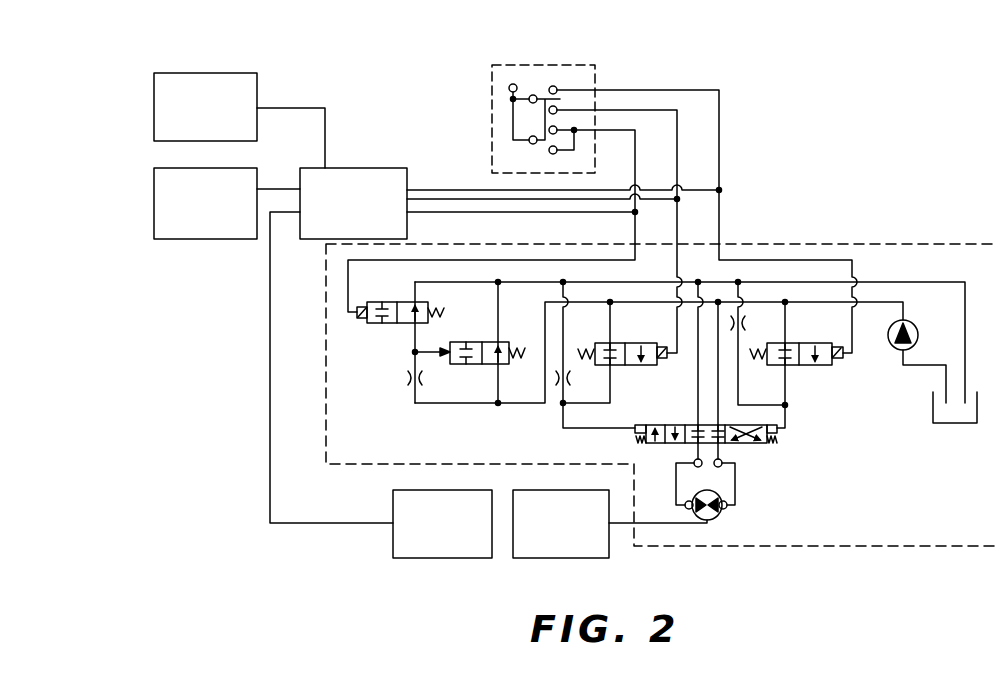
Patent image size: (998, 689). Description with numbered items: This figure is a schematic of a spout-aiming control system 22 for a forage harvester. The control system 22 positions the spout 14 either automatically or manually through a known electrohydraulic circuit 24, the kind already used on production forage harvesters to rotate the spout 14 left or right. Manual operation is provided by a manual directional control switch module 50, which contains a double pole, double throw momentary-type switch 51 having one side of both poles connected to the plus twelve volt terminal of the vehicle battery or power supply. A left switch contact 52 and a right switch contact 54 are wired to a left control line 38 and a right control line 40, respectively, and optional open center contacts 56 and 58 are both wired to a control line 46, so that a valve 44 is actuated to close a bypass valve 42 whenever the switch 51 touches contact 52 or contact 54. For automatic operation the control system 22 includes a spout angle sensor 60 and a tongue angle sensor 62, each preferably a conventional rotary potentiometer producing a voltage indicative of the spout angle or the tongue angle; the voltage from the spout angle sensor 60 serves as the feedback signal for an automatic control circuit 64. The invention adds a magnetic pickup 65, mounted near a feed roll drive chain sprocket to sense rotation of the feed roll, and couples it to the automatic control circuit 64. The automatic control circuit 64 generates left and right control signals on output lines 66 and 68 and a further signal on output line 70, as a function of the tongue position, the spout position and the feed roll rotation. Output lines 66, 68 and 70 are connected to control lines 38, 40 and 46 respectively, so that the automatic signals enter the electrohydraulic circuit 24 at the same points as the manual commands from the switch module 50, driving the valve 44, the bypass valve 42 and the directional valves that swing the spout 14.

The spout 14 is at (596, 480).
The control system 22 is at (387, 88).
The electrohydraulic circuit 24 is at (326, 322).
The left control line 38 is at (678, 237).
The right control line 40 is at (720, 237).
The bypass valve 42 is at (455, 342).
The valve 44 is at (407, 300).
The control line 46 is at (636, 237).
The manual directional control switch module 50 is at (541, 108).
The double pole, double throw momentary-type switch 51 is at (547, 72).
The left switch contact 52 is at (558, 112).
The right switch contact 54 is at (557, 86).
The open center contact 56 is at (558, 133).
The open center contact 58 is at (553, 154).
The spout angle sensor 60 is at (470, 490).
The tongue angle sensor 62 is at (158, 168).
The automatic control circuit 64 is at (392, 168).
The magnetic pickup 65 is at (236, 73).
The output line 66 is at (478, 199).
The output line 68 is at (457, 190).
The output line 70 is at (447, 212).